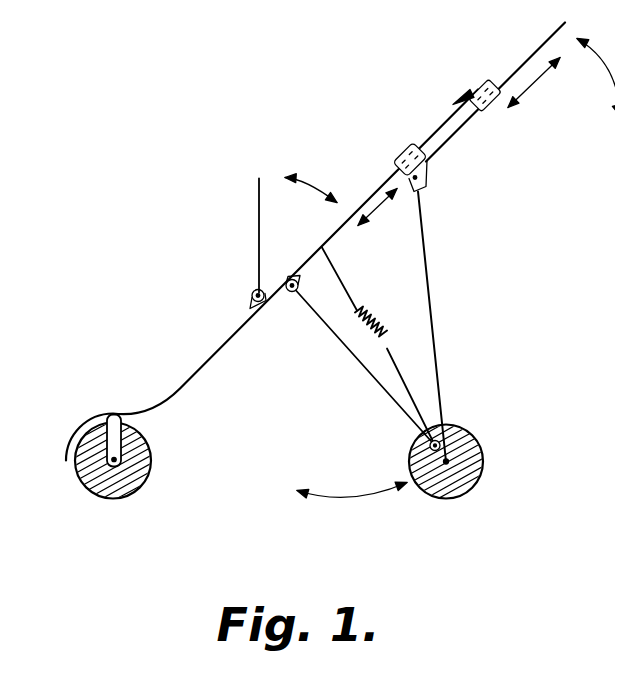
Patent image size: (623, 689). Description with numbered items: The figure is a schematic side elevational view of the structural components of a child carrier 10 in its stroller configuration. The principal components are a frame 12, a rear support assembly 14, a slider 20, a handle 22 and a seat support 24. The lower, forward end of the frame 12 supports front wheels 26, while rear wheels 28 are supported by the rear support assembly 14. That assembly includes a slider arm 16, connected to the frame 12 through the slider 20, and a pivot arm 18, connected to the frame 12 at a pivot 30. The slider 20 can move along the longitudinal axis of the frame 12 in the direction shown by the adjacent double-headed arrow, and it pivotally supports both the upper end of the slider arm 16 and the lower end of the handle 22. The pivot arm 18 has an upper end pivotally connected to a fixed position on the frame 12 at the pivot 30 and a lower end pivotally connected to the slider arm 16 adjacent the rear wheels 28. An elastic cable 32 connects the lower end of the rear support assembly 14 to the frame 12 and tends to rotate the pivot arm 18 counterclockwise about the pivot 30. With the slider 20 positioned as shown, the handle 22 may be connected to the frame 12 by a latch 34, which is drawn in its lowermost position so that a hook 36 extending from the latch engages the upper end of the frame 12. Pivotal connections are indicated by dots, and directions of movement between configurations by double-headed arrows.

The carrier 10 is at (182, 179).
The frame 12 is at (203, 360).
The rear support assembly 14 is at (445, 322).
The slider arm 16 is at (422, 253).
The pivot arm 18 is at (357, 362).
The slider 20 is at (397, 158).
The handle 22 is at (540, 45).
The seat support 24 is at (259, 212).
The front wheels 26 is at (87, 487).
The rear wheels 28 is at (480, 442).
The pivot 30 is at (287, 293).
The elastic cable 32 is at (378, 312).
The latch 34 is at (490, 82).
The hook 36 is at (458, 100).